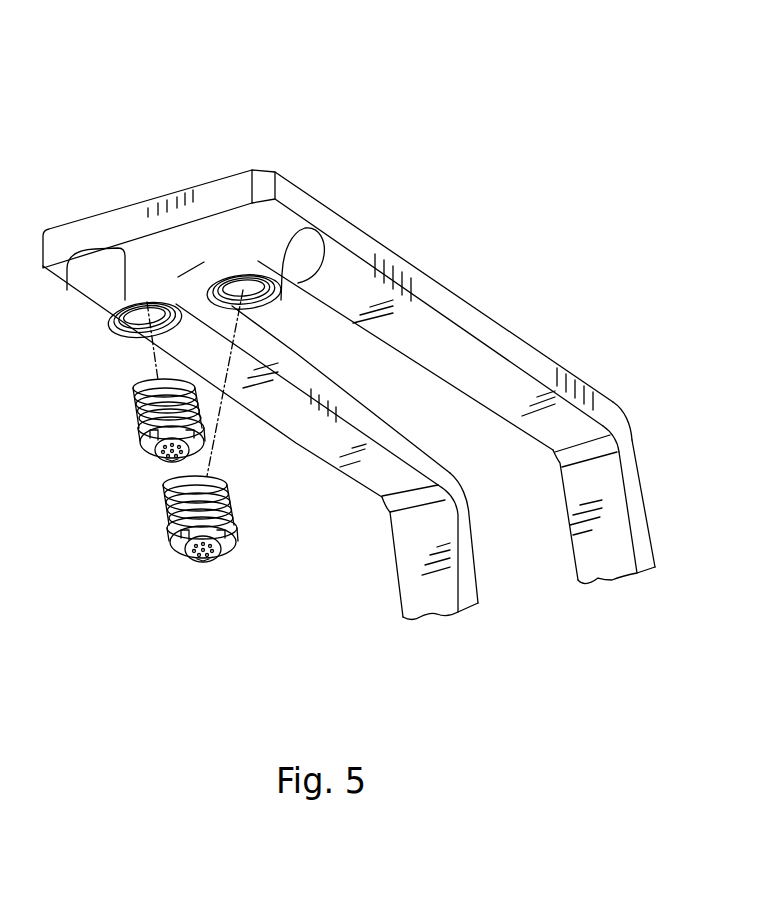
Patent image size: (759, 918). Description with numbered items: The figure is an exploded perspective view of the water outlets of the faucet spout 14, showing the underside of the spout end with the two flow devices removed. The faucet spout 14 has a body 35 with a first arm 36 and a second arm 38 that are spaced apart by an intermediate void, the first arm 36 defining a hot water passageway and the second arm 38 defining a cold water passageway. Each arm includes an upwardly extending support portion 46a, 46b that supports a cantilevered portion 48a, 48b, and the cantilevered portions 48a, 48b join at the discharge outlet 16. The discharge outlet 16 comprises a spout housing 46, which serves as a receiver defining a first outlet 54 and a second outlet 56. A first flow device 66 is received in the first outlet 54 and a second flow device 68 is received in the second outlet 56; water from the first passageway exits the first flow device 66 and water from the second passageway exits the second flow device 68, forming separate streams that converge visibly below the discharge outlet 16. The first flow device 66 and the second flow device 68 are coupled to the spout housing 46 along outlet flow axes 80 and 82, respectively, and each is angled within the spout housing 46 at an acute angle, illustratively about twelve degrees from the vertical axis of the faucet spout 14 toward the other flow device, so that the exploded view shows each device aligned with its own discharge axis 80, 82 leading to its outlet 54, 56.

The faucet spout 14 is at (168, 115).
The discharge outlet 16 is at (290, 317).
The body 35 is at (622, 428).
The first arm 36 is at (392, 565).
The second arm 38 is at (640, 518).
The spout housing 46 is at (147, 261).
The upwardly extending support portion 46a is at (428, 598).
The upwardly extending support portion 46b is at (606, 565).
The cantilevered portion 48a is at (375, 421).
The cantilevered portion 48b is at (473, 318).
The first outlet 54 is at (110, 325).
The second outlet 56 is at (288, 300).
The first flow device 66 is at (119, 448).
The second flow device 68 is at (154, 553).
The outlet flow axis 80 is at (153, 366).
The outlet flow axis 82 is at (216, 455).